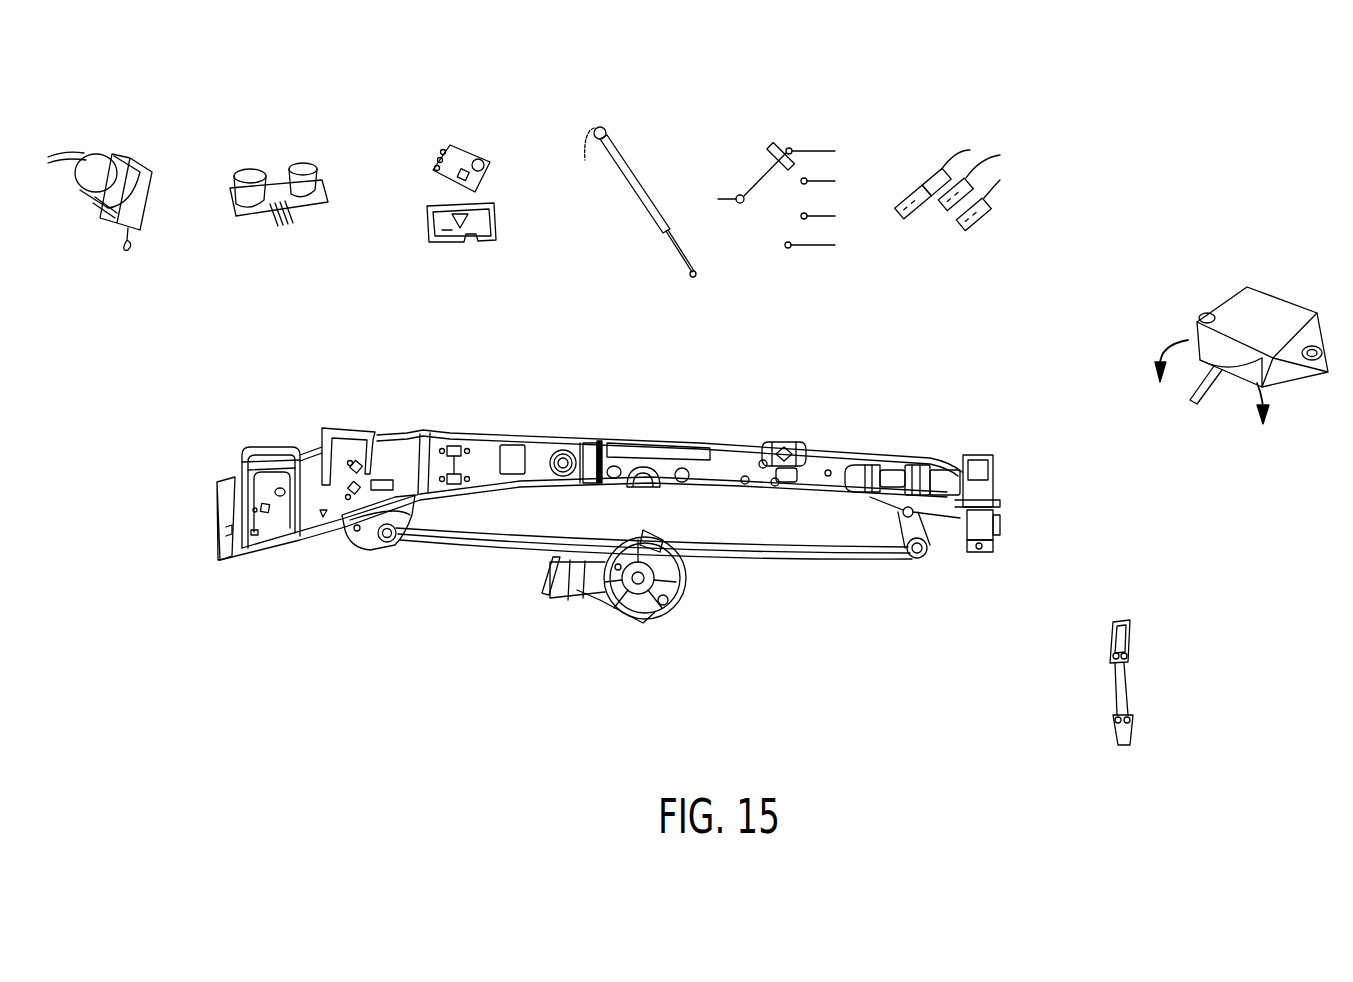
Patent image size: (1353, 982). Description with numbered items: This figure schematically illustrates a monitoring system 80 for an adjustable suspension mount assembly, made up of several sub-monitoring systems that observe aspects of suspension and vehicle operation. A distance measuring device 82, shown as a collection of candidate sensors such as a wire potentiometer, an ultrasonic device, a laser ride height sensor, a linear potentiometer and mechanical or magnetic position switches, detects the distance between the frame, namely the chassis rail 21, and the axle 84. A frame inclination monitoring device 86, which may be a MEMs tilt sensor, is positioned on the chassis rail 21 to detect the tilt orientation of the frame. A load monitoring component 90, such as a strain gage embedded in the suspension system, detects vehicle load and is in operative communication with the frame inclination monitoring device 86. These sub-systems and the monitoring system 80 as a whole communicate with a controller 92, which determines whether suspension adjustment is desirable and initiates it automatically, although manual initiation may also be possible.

The chassis rail 21 is at (410, 473).
The monitoring system 80 is at (300, 610).
The distance measuring device 82 is at (1122, 110).
The axle 84 is at (650, 581).
The frame inclination monitoring device 86 is at (793, 440).
The load monitoring component 90 is at (1127, 648).
The controller 92 is at (767, 437).